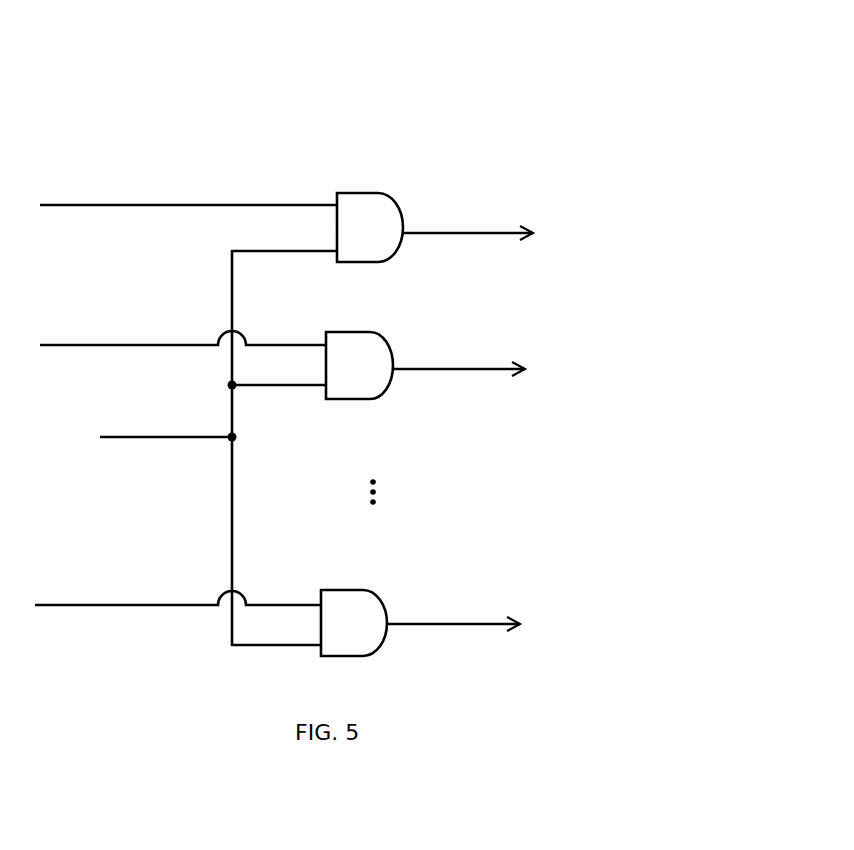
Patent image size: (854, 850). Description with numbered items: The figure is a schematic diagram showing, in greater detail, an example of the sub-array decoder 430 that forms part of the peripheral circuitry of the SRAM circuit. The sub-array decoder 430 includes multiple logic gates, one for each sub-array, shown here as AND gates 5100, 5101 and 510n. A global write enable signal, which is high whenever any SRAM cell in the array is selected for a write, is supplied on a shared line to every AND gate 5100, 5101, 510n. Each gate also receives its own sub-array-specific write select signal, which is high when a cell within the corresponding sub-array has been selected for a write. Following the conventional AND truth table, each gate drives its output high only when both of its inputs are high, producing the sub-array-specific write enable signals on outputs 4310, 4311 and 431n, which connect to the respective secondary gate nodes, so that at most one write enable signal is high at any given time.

The sub-array decoder 430 is at (72, 60).
The AND gate 5100 is at (370, 227).
The AND gate 5101 is at (359, 365).
The AND gate 510n is at (354, 623).
The output 4310 is at (404, 232).
The output 4311 is at (395, 368).
The output 431n is at (389, 623).